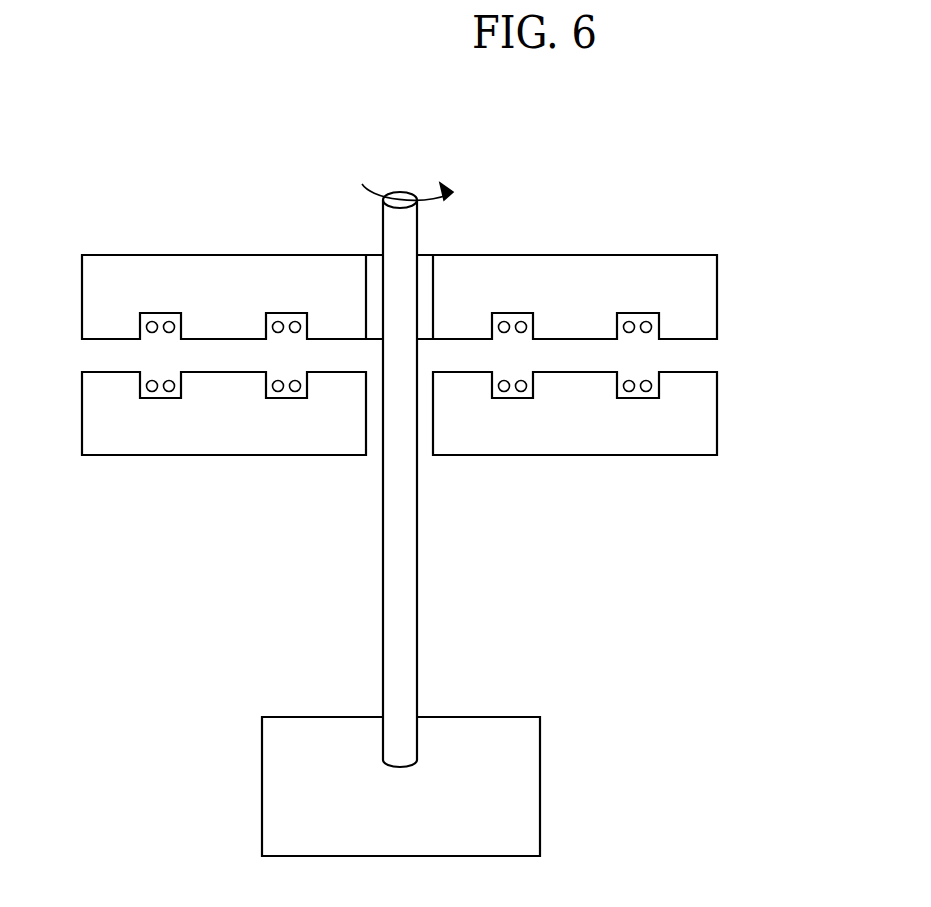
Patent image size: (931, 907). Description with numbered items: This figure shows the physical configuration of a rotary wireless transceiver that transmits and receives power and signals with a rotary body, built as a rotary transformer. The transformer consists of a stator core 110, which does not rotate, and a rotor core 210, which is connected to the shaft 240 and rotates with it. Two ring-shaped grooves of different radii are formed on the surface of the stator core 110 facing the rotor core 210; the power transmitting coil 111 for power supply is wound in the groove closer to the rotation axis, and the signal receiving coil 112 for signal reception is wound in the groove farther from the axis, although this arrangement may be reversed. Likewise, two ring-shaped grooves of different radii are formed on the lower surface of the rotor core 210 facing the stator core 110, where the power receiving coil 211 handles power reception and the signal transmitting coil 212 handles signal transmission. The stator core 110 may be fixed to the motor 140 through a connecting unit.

The stator core 110 is at (707, 412).
The power transmitting coil 111 is at (286, 392).
The signal receiving coil 112 is at (160, 392).
The motor 140 is at (401, 786).
The rotor core 210 is at (708, 295).
The power receiving coil 211 is at (283, 318).
The signal transmitting coil 212 is at (158, 318).
The shaft 240 is at (398, 200).